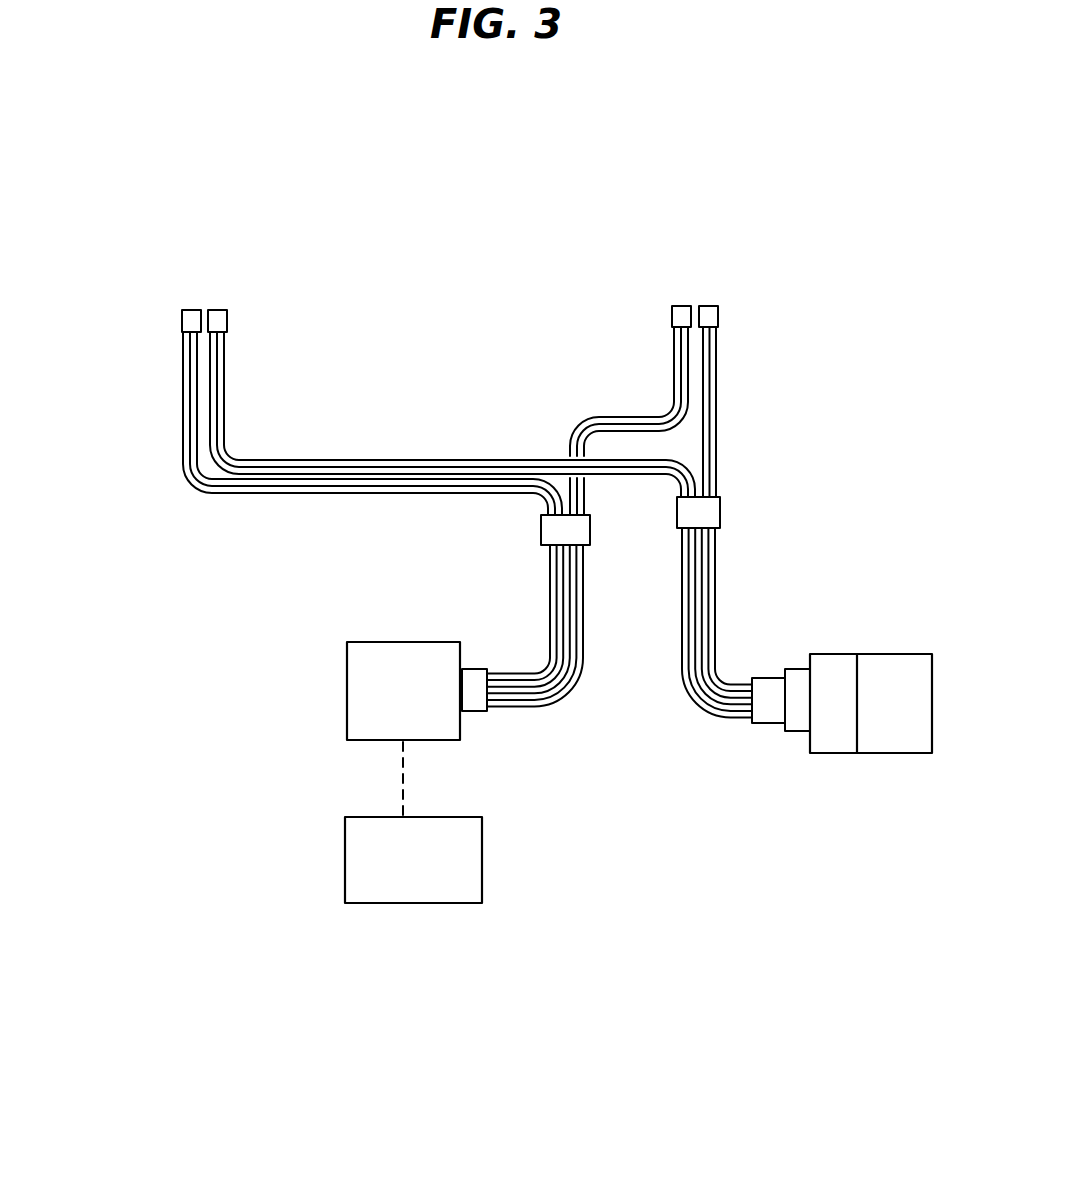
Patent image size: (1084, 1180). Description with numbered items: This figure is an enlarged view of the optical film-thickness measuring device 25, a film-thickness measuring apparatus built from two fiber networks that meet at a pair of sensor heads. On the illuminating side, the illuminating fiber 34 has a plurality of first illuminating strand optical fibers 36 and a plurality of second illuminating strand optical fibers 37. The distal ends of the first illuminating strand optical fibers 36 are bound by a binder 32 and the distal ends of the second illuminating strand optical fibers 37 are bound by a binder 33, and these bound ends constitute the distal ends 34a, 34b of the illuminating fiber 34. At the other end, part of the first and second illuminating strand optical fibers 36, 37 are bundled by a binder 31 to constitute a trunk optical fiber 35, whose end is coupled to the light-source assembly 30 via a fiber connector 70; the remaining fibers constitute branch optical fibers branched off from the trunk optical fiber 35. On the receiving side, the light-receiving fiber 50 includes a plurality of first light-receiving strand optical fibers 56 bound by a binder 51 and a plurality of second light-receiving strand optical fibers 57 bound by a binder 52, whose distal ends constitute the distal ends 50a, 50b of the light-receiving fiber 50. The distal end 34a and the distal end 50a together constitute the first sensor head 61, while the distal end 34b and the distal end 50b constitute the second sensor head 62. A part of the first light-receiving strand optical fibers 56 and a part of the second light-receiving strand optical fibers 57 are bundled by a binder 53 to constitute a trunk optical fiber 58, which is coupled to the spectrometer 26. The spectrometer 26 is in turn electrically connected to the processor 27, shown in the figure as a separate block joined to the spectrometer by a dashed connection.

The optical film-thickness measuring device 25 is at (407, 238).
The spectrometer 26 is at (403, 642).
The processor 27 is at (413, 903).
The light-source assembly 30 is at (873, 654).
The binder 31 is at (722, 512).
The binder 32 is at (718, 315).
The binder 33 is at (228, 318).
The illuminating fiber 34 is at (720, 475).
The distal end of illuminating fiber 34a is at (707, 306).
The distal end of illuminating fiber 34b is at (218, 310).
The trunk optical fiber 35 is at (718, 640).
The first illuminating strand optical fibers 36 is at (716, 383).
The second illuminating strand optical fibers 37 is at (235, 393).
The light-receiving fiber 50 is at (198, 510).
The distal end of light-receiving fiber 50a is at (680, 306).
The distal end of light-receiving fiber 50b is at (192, 310).
The binder 51 is at (672, 315).
The binder 52 is at (182, 318).
The binder 53 is at (592, 530).
The first light-receiving strand optical fibers 56 is at (668, 375).
The second light-receiving strand optical fibers 57 is at (178, 393).
The trunk optical fiber 58 is at (588, 618).
The first sensor head 61 is at (697, 278).
The second sensor head 62 is at (203, 278).
The fiber connector 70 is at (795, 732).